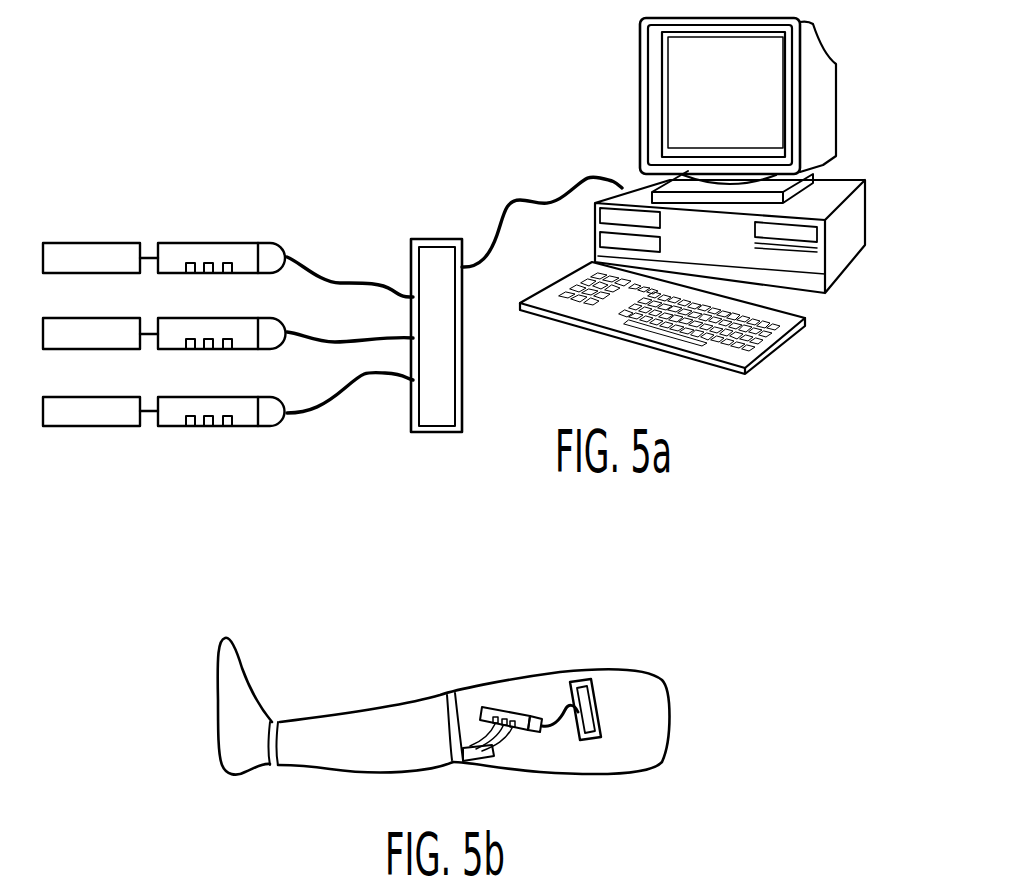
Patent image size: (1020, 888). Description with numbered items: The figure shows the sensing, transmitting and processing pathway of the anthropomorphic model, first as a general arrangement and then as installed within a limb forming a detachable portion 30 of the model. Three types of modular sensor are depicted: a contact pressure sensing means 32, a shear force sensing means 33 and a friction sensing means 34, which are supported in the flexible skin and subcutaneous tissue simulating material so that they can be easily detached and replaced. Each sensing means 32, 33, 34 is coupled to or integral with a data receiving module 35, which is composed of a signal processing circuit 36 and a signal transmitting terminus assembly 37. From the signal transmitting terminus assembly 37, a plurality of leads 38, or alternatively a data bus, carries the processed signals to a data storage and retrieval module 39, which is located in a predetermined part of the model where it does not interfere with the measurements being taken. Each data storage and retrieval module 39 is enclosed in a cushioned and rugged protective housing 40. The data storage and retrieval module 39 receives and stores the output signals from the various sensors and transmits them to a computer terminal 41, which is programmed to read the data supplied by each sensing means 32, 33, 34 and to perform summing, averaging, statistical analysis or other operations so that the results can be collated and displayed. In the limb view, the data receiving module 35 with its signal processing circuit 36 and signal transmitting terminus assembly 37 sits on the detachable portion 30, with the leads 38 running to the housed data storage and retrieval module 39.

In FIG. 5B, the detachable portion 30 is at (455, 765).
In FIG. 5A, the contact pressure sensing means 32 is at (70, 246).
In FIG. 5A, the shear force sensing means 33 is at (50, 338).
In FIG. 5A, the friction sensing means 34 is at (55, 417).
In FIG. 5A, the data receiving module 35 is at (173, 247).
In FIG. 5B, the data receiving module 35 is at (485, 708).
In FIG. 5A, the signal processing circuit 36 is at (230, 267).
In FIG. 5B, the signal processing circuit 36 is at (512, 730).
In FIG. 5A, the signal transmitting terminus assembly 37 is at (293, 250).
In FIG. 5B, the signal transmitting terminus assembly 37 is at (536, 733).
In FIG. 5A, the leads 38 is at (380, 277).
In FIG. 5B, the leads 38 is at (553, 712).
In FIG. 5A, the data storage and retrieval module 39 is at (455, 358).
In FIG. 5B, the data storage and retrieval module 39 is at (588, 740).
In FIG. 5A, the protective housing 40 is at (465, 296).
In FIG. 5B, the protective housing 40 is at (605, 721).
In FIG. 5A, the computer terminal 41 is at (647, 85).